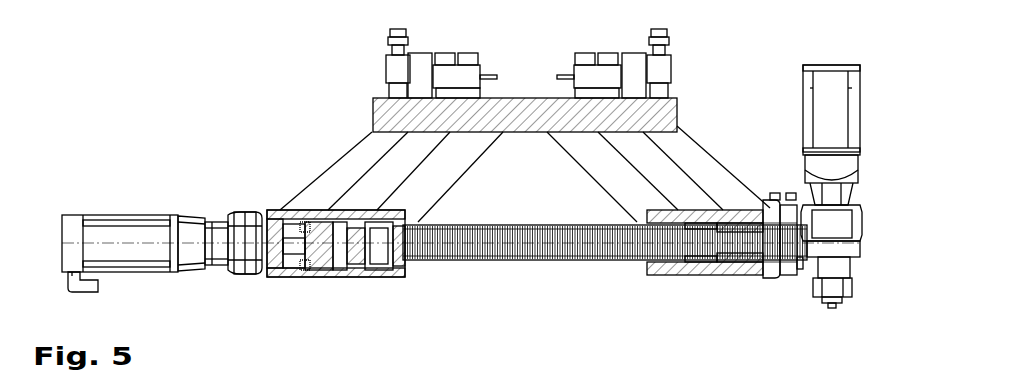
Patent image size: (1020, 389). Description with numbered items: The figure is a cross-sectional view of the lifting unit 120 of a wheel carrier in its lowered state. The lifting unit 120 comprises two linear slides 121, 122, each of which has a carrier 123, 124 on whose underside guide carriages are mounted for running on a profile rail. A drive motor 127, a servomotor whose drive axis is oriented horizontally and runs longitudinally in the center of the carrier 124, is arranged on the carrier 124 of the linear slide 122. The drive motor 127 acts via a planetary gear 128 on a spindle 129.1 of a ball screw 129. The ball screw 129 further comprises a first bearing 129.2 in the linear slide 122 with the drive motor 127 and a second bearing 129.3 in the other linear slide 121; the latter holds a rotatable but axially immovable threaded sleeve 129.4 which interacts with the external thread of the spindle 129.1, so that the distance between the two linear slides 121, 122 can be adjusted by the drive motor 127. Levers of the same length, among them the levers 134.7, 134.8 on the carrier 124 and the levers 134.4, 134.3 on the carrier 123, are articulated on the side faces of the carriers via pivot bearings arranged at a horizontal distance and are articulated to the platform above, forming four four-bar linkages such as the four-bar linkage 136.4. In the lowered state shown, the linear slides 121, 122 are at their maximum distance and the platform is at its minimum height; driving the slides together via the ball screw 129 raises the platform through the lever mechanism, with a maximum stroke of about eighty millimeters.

The lifting unit 120 is at (175, 124).
The linear slide 121 is at (664, 278).
The linear slide 122 is at (283, 298).
The carrier 123 is at (712, 278).
The carrier 124 is at (328, 278).
The drive motor 127 is at (135, 228).
The planetary gear 128 is at (240, 266).
The ball screw 129 is at (504, 276).
The spindle 129.1 is at (543, 246).
The first bearing 129.2 is at (305, 222).
The second bearing 129.3 is at (690, 278).
The threaded sleeve 129.4 is at (748, 276).
The lever 134.3 is at (703, 172).
The lever 134.4 is at (587, 148).
The lever 134.7 is at (360, 150).
The lever 134.8 is at (465, 150).
The four-bar linkage 136.4 is at (328, 136).